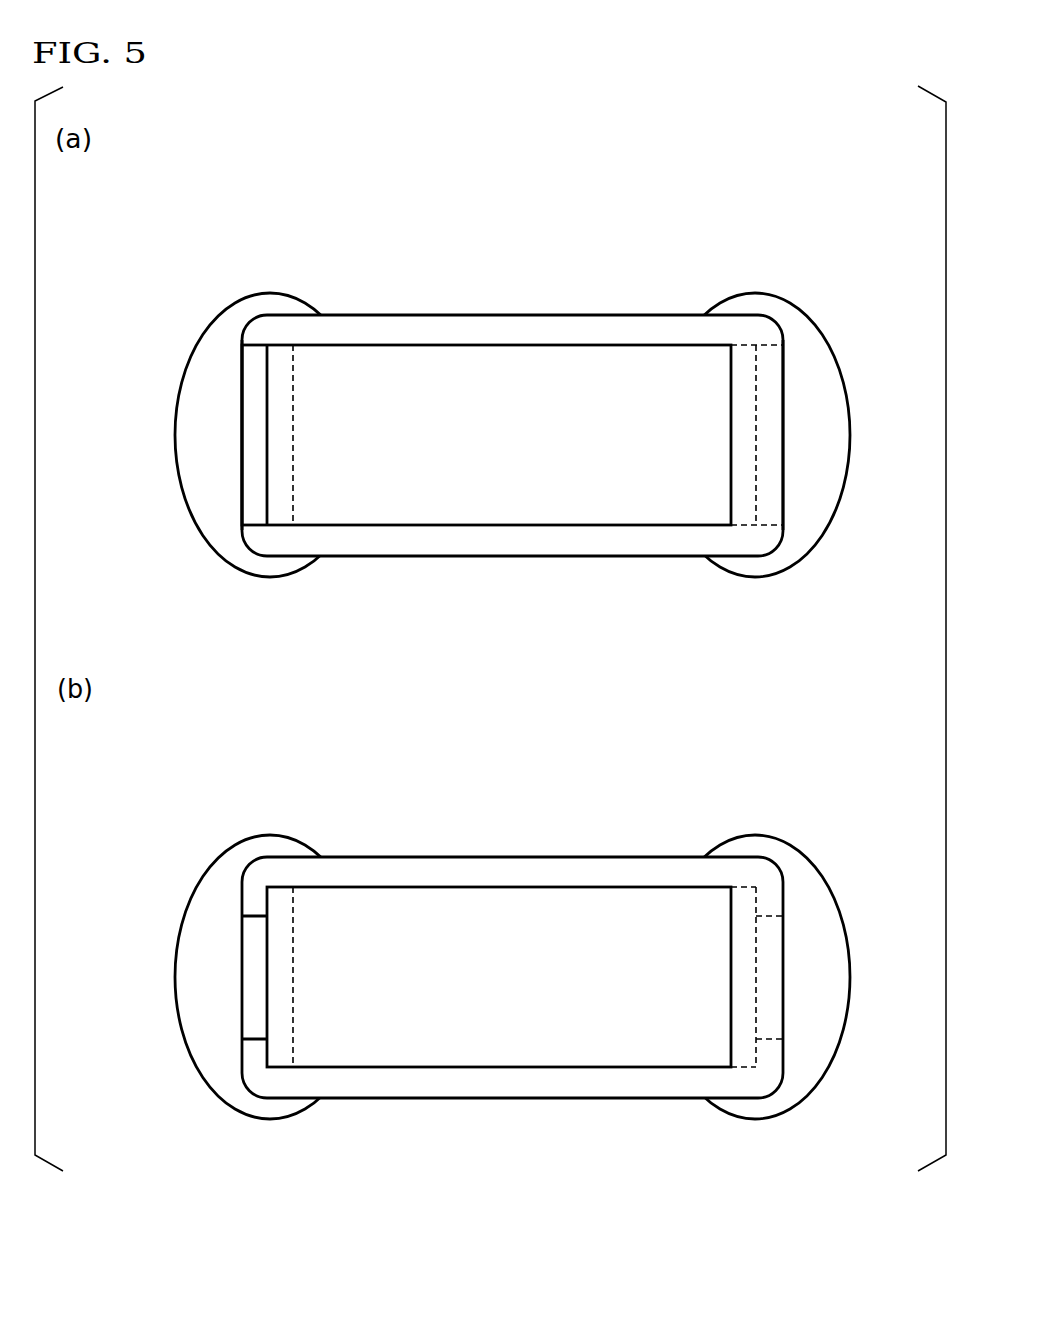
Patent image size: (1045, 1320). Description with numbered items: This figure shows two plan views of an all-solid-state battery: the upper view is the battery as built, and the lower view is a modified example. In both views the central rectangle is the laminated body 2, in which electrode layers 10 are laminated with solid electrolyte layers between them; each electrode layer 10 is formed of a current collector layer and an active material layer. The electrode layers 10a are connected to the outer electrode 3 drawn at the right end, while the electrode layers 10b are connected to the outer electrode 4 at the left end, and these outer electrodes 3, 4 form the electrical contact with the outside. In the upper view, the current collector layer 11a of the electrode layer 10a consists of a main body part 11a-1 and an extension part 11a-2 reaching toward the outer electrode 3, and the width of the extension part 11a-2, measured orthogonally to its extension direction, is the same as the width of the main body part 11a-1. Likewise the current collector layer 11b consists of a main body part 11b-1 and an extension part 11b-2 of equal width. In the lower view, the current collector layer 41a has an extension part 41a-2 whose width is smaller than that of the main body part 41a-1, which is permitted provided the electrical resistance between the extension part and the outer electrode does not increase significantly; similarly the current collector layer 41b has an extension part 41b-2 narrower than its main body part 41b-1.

The laminated body 2 is at (546, 303).
The electrode layers 10 is at (504, 333).
The electrode layer 10a is at (797, 388).
The electrode layer 10b is at (227, 384).
The current collector layer 11a is at (744, 272).
The main body part 11a-1 is at (743, 362).
The extension part 11a-2 is at (768, 362).
The current collector layer 11b is at (265, 353).
The main body part 11b-1 is at (278, 363).
The extension part 11b-2 is at (254, 363).
The outer electrode 3 is at (820, 435).
The outer electrode 4 is at (202, 435).
The current collector layer 41a is at (744, 881).
The main body part 41a-1 is at (745, 907).
The extension part 41a-2 is at (768, 932).
The current collector layer 41b is at (265, 895).
The main body part 41b-1 is at (278, 907).
The extension part 41b-2 is at (254, 932).